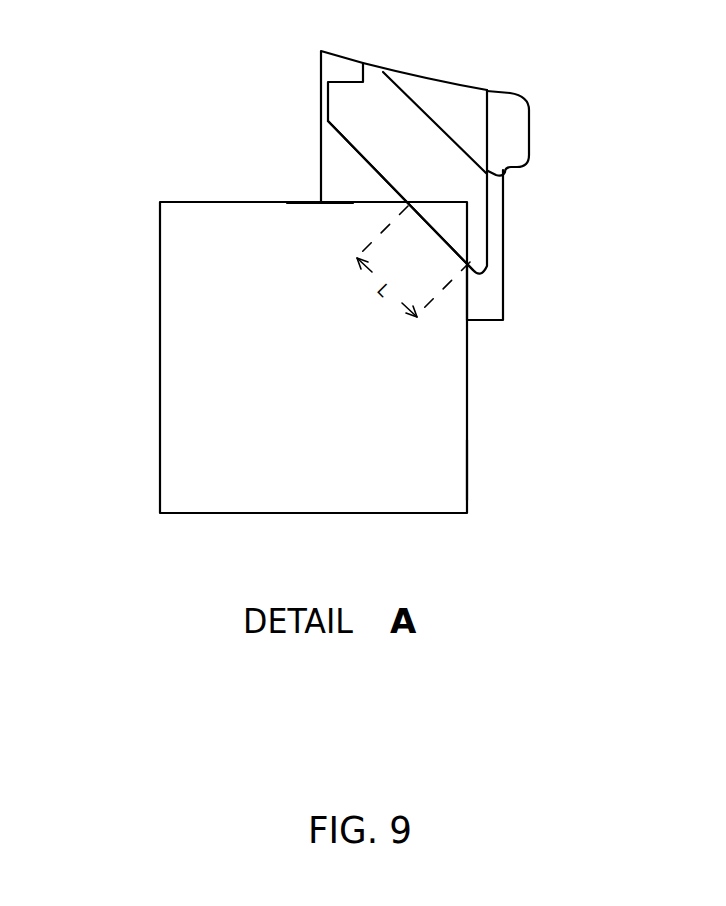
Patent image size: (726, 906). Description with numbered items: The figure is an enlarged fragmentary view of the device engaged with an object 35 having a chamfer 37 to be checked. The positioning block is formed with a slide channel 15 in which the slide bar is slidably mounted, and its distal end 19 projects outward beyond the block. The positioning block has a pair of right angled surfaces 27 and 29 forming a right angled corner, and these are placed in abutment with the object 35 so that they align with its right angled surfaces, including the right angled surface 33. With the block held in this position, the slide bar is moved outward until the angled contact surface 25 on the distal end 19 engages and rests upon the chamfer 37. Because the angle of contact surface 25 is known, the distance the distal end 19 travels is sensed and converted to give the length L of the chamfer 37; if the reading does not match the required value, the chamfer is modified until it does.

The slide channel 15 is at (486, 113).
The distal end 19 is at (453, 177).
The angled contact surface 25 is at (350, 146).
The right angled surface 27 is at (353, 203).
The right angled surface 29 is at (470, 300).
The right angled surface 33 is at (468, 395).
The object 35 is at (468, 470).
The chamfer 37 is at (438, 230).